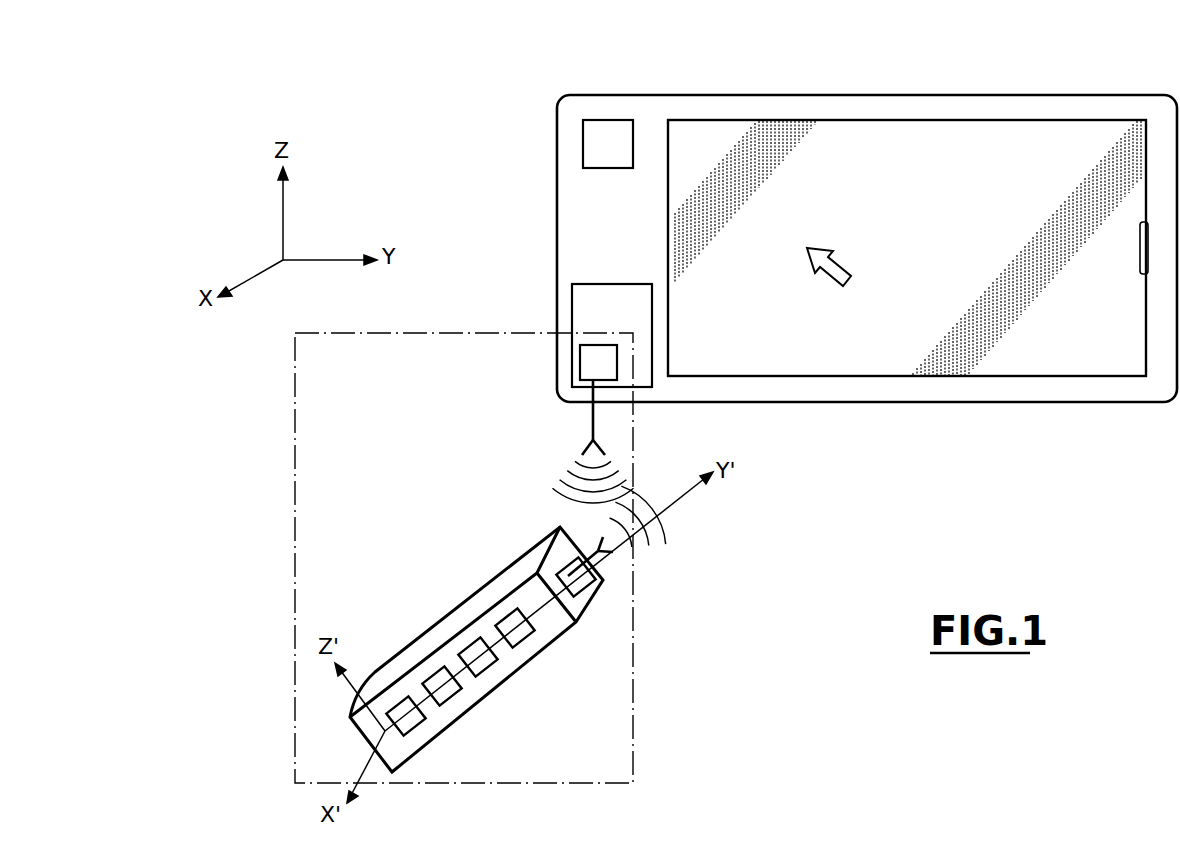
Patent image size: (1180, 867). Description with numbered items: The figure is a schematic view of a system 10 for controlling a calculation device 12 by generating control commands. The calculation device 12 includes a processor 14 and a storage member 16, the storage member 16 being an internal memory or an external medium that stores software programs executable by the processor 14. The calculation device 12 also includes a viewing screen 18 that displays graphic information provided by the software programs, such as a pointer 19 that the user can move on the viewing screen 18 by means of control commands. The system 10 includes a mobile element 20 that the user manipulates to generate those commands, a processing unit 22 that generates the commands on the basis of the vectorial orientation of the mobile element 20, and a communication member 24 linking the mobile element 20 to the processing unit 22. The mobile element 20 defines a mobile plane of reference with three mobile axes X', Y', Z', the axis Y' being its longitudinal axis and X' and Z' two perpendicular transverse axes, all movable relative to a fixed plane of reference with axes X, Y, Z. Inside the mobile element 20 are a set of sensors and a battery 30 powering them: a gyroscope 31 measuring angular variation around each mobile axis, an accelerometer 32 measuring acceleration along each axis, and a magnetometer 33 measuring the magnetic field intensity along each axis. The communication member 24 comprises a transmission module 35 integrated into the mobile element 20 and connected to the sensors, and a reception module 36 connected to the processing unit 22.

The system 10 is at (295, 477).
The calculation device 12 is at (983, 94).
The processor 14 is at (608, 144).
The storage member 16 is at (612, 335).
The viewing screen 18 is at (1050, 378).
The pointer 19 is at (860, 256).
The mobile element 20 is at (425, 760).
The processing unit 22 is at (580, 362).
The communication member 24 is at (537, 493).
The battery 30 is at (400, 708).
The gyroscope 31 is at (447, 700).
The accelerometer 32 is at (487, 668).
The magnetometer 33 is at (520, 637).
The transmission module 35 is at (577, 587).
The reception module 36 is at (585, 421).